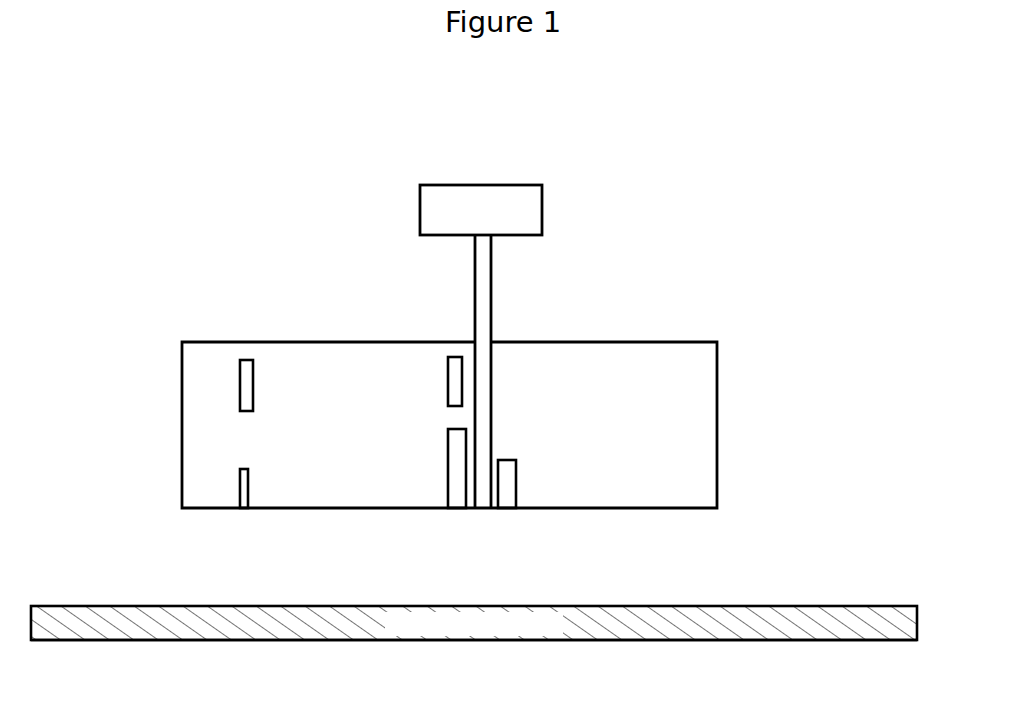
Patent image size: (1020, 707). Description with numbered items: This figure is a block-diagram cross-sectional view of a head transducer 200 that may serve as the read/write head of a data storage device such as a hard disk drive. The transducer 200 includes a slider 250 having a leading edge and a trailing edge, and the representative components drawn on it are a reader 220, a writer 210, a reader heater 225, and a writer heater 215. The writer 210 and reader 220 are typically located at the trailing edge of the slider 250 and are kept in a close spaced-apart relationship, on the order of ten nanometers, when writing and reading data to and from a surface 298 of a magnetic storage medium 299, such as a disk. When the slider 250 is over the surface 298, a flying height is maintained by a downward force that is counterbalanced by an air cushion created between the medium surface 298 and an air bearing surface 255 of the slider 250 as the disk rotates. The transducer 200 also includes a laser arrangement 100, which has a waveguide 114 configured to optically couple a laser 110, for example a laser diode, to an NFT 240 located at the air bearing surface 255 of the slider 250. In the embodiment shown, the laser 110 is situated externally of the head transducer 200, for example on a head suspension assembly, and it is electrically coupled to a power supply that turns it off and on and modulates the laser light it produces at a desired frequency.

The laser arrangement 100 is at (583, 140).
The laser 110 is at (543, 212).
The waveguide 114 is at (493, 290).
The head transducer 200 is at (718, 389).
The writer 210 is at (447, 467).
The writer heater 215 is at (447, 380).
The reader 220 is at (249, 489).
The reader heater 225 is at (254, 381).
The NFT 240 is at (507, 458).
The slider 250 is at (197, 524).
The air bearing surface 255 is at (568, 521).
The surface 298 is at (875, 606).
The magnetic storage medium 299 is at (770, 641).